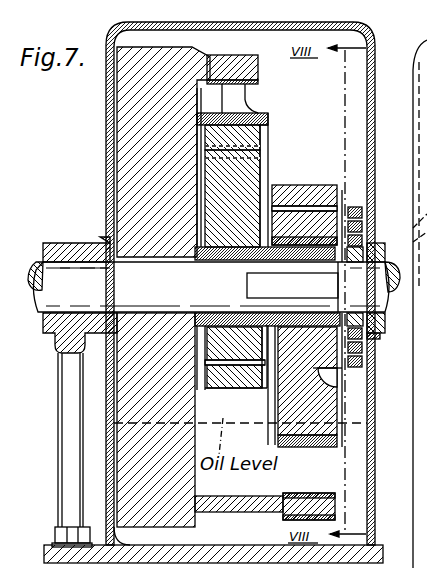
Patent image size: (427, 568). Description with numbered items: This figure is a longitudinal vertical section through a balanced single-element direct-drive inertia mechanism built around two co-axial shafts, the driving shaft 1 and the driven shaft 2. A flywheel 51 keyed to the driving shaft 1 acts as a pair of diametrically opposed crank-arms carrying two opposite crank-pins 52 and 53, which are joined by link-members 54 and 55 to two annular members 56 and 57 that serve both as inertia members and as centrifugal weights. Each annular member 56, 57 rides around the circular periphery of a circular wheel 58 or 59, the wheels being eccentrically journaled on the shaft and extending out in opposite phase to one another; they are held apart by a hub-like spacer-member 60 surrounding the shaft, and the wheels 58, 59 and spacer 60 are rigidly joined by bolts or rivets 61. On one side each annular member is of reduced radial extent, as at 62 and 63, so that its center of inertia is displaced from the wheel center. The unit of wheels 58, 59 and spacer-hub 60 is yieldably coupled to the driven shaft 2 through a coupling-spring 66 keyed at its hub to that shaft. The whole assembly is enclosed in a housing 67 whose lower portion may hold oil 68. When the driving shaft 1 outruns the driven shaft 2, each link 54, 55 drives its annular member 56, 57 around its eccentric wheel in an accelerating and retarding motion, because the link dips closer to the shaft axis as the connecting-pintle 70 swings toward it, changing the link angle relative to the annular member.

The driving shaft 1 is at (43, 263).
The driven shaft 2 is at (378, 262).
The flywheel 51 is at (137, 173).
The crank-pin 52 is at (258, 70).
The crank-pin 53 is at (337, 506).
The link-member 54 is at (247, 98).
The link-member 55 is at (306, 493).
The annular member 56 is at (262, 128).
The annular member 57 is at (337, 188).
The circular wheel 58 is at (245, 178).
The circular wheel 59 is at (275, 428).
The hub-like spacer-member 60 is at (273, 308).
The bolts or rivets 61 is at (228, 251).
The reduced radial extent portion 62 is at (217, 120).
The reduced radial extent portion 63 is at (338, 437).
The coupling-spring 66 is at (365, 362).
The housing 67 is at (108, 113).
The oil 68 is at (221, 413).
The connecting-pintle 70 is at (260, 138).